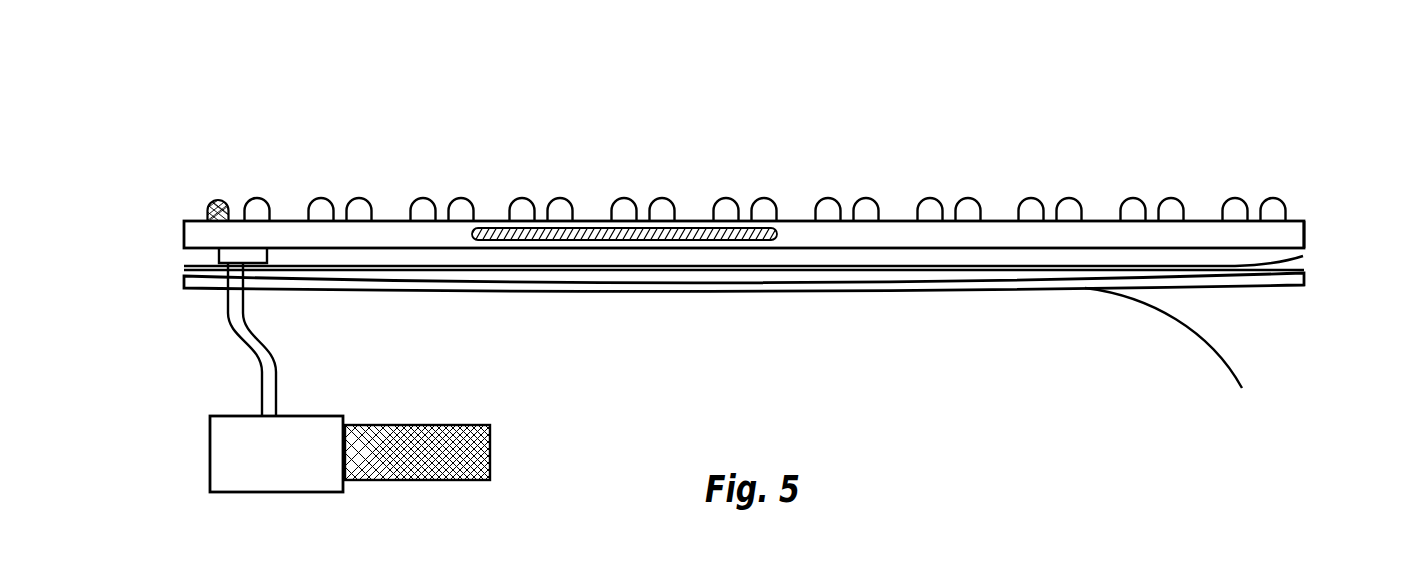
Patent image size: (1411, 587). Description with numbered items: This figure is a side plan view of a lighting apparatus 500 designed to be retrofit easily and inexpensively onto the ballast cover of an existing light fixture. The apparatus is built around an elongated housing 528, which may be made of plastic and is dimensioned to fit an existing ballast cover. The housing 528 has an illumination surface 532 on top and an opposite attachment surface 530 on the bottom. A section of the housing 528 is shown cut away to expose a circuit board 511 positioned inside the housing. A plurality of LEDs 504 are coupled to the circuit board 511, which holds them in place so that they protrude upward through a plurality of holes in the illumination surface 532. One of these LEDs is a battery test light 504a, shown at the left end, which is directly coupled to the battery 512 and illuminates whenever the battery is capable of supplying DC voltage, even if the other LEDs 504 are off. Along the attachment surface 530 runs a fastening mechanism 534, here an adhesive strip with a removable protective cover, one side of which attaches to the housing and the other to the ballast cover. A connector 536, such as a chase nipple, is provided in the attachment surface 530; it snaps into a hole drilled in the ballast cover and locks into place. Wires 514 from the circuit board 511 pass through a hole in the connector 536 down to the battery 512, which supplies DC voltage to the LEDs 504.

The lighting apparatus 500 is at (352, 142).
The LEDs 504 is at (663, 203).
The battery test light 504a is at (218, 203).
The circuit board 511 is at (493, 228).
The battery 512 is at (293, 466).
The wires 514 is at (250, 355).
The housing 528 is at (1310, 230).
The attachment surface 530 is at (193, 253).
The illumination surface 532 is at (197, 218).
The fastening mechanism 534 is at (872, 295).
The connector 536 is at (255, 257).